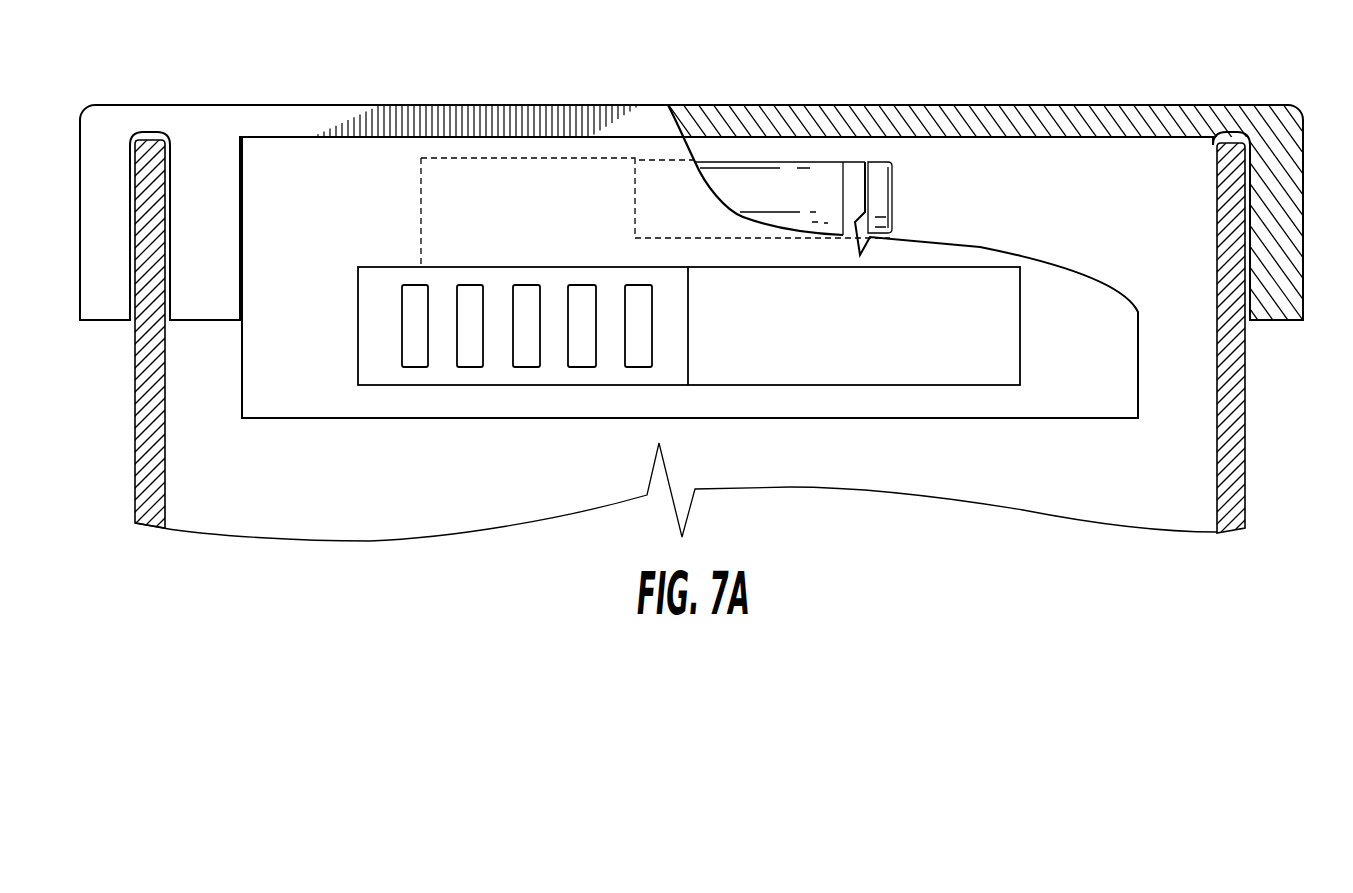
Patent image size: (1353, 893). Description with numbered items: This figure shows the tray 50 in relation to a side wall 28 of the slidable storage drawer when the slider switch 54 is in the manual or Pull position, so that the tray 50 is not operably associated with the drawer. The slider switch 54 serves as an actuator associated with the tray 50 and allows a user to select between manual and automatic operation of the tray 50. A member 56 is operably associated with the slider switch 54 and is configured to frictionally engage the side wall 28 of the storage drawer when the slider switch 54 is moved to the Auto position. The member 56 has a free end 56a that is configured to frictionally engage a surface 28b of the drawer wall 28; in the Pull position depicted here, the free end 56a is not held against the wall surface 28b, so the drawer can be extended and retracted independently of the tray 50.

The tray 50 is at (282, 105).
The side wall 28 is at (136, 428).
The surface of drawer wall 28b is at (1213, 278).
The slider switch 54 is at (382, 282).
The member 56 is at (798, 175).
The free end 56a is at (893, 190).